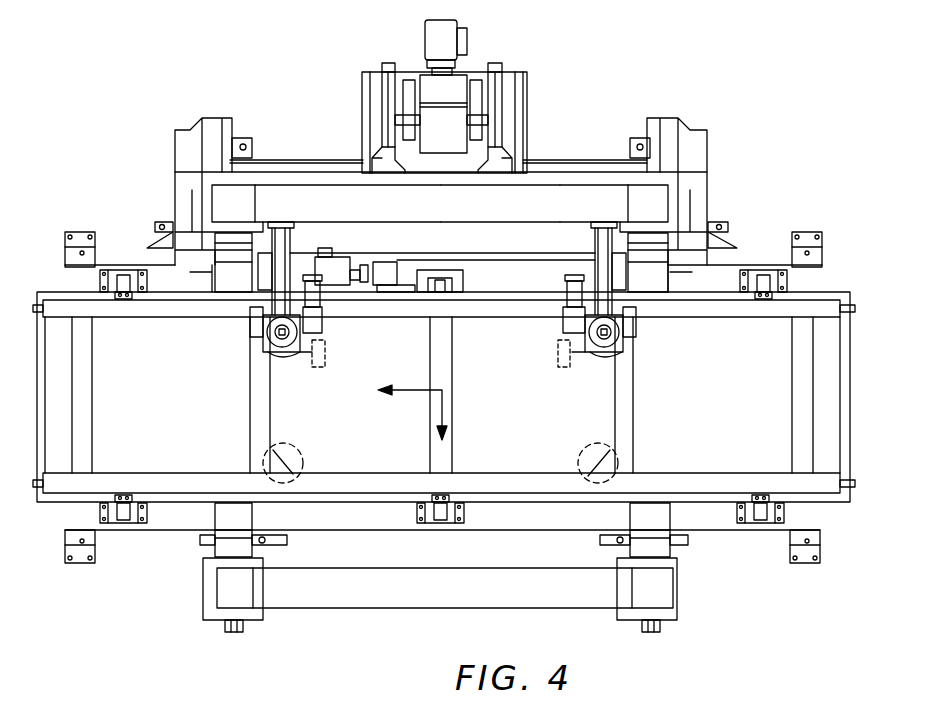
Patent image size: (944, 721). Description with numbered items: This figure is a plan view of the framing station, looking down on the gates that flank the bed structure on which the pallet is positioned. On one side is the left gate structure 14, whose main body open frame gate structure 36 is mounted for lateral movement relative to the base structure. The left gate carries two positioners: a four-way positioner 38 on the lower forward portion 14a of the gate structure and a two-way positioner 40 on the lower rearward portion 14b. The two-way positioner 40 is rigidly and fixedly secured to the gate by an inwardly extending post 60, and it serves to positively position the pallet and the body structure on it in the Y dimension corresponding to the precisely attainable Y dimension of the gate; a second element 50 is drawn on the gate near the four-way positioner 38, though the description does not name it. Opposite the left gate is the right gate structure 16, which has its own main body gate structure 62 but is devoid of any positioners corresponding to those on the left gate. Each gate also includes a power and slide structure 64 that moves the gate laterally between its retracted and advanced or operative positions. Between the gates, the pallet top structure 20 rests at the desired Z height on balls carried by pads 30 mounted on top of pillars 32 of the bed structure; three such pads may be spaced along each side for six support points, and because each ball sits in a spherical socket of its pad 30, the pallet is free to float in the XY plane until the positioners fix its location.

The left gate structure 14 is at (442, 173).
The lower forward portion of the gate structure 14a is at (600, 195).
The lower rearward portion of the gate structure 14b is at (325, 188).
The right gate structure 16 is at (440, 618).
The pallet top structure 20 is at (782, 408).
The pad 30 is at (118, 280).
The pillar 32 is at (752, 268).
The main body open frame gate structure 36 is at (538, 200).
The four-way positioner 38 is at (630, 344).
The two-way positioner 40 is at (256, 339).
The right column 50 is at (602, 243).
The inwardly extending post 60 is at (292, 238).
The main body gate structure 62 is at (400, 598).
The power and slide structure 64 is at (520, 55).